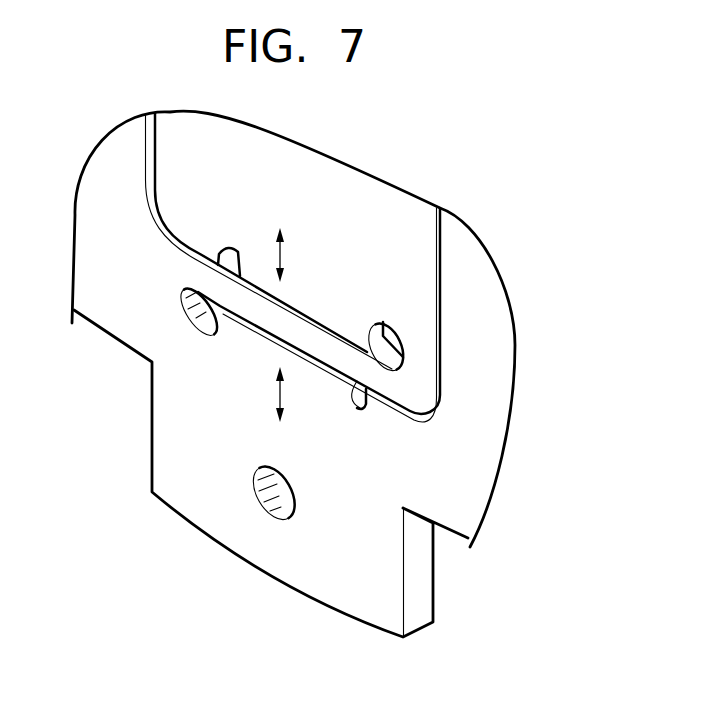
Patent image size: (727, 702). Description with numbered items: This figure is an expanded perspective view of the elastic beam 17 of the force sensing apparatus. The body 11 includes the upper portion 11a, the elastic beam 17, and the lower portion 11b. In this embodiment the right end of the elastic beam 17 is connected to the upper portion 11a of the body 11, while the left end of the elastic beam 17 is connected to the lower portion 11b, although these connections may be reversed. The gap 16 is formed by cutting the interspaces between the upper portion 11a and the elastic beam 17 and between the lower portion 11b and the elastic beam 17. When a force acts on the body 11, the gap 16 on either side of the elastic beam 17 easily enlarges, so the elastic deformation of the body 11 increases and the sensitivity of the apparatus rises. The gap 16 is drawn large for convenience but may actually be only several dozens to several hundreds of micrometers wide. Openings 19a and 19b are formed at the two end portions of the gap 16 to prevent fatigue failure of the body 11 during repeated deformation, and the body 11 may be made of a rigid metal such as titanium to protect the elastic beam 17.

The body 11 is at (433, 572).
The upper portion 11a is at (355, 192).
The lower portion 11b is at (200, 517).
The gap 16 is at (268, 336).
The elastic beam 17 is at (335, 353).
The opening 19a is at (207, 323).
The opening 19b is at (383, 357).